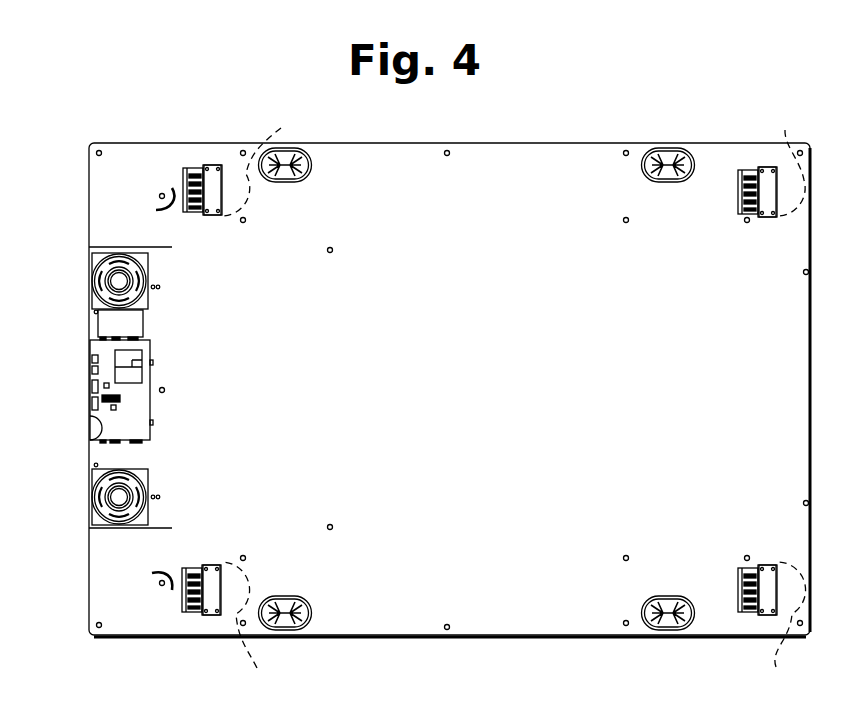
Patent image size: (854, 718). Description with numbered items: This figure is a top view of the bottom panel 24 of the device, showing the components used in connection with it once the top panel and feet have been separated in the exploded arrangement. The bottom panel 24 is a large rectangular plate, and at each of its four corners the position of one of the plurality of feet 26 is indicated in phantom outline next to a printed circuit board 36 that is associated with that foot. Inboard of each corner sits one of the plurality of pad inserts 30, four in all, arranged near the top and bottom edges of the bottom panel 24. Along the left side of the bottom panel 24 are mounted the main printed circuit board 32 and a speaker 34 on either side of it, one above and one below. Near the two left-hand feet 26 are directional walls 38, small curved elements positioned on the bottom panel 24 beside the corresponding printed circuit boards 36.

The bottom panel 24 is at (507, 615).
The feet 26 is at (514, 399).
The pad inserts 30 is at (290, 150).
The main printed circuit board 32 is at (112, 426).
The speakers 34 is at (106, 281).
The printed circuit board 36 is at (208, 170).
The directional walls 38 is at (156, 210).